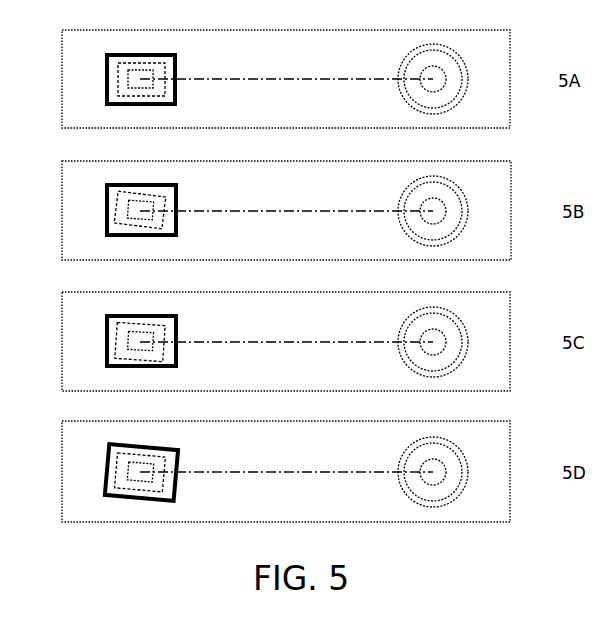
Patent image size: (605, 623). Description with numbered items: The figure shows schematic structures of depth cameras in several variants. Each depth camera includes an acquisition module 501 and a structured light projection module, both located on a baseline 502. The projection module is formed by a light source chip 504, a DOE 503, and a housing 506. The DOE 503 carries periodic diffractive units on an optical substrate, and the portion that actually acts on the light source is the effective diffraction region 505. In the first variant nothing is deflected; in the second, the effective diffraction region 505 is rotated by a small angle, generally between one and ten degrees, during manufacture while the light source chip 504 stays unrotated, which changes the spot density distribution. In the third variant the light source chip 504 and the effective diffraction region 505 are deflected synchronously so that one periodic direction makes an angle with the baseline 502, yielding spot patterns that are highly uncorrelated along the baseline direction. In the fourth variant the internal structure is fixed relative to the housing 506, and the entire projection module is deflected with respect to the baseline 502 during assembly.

The acquisition module 501 is at (463, 93).
The baseline 502 is at (300, 80).
The DOE 503 is at (112, 93).
The light source chip 504 is at (128, 78).
The effective diffraction region 505 is at (165, 65).
The housing 506 is at (177, 100).